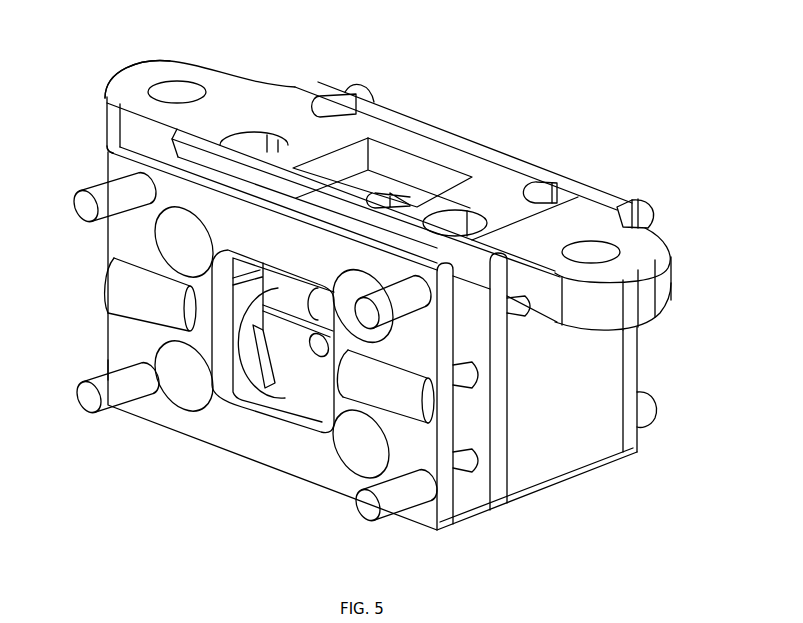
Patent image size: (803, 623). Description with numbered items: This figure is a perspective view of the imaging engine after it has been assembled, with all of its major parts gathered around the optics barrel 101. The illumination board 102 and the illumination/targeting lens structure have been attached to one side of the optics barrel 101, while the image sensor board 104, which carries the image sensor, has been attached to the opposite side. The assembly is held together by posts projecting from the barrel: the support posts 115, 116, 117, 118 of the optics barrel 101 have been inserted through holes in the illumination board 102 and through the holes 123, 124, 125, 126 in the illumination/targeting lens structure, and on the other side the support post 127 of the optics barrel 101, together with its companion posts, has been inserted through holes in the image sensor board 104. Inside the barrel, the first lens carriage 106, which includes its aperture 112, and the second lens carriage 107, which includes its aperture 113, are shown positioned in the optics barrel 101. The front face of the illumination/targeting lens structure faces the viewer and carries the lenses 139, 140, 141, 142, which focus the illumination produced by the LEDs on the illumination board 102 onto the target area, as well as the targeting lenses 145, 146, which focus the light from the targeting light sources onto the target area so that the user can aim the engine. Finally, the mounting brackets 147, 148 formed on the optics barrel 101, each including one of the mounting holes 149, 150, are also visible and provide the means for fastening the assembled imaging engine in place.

The optics barrel 101 is at (577, 478).
The illumination board 102 is at (500, 490).
The image sensor board 104 is at (440, 128).
The first lens carriage 106 is at (233, 390).
The second lens carriage 107 is at (285, 370).
The aperture 112 is at (281, 298).
The aperture 113 is at (315, 358).
The support post 115 is at (102, 190).
The support post 116 is at (108, 405).
The support post 117 is at (415, 285).
The support post 118 is at (392, 497).
The hole 123 is at (108, 150).
The hole 124 is at (118, 367).
The hole 125 is at (428, 297).
The hole 126 is at (430, 505).
The support post 127 is at (358, 86).
The lens 139 is at (190, 235).
The lens 140 is at (180, 390).
The lens 141 is at (342, 284).
The lens 142 is at (360, 453).
The targeting lens 145 is at (128, 288).
The targeting lens 146 is at (378, 412).
The mounting bracket 147 is at (140, 87).
The mounting bracket 148 is at (643, 253).
The mounting hole 149 is at (177, 93).
The mounting hole 150 is at (598, 253).